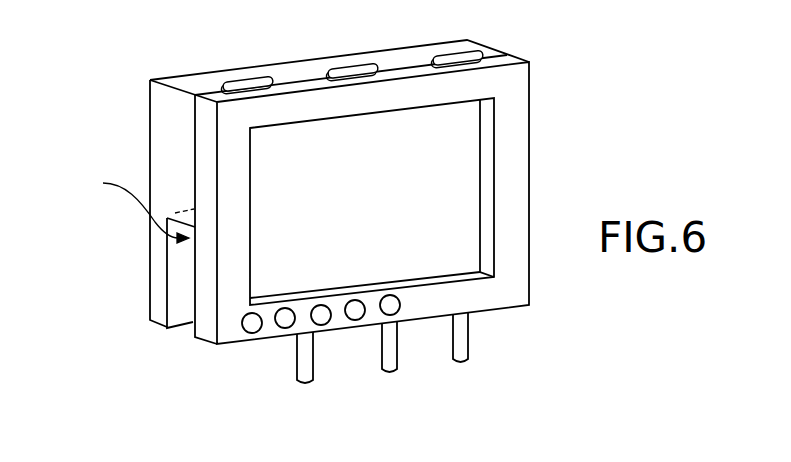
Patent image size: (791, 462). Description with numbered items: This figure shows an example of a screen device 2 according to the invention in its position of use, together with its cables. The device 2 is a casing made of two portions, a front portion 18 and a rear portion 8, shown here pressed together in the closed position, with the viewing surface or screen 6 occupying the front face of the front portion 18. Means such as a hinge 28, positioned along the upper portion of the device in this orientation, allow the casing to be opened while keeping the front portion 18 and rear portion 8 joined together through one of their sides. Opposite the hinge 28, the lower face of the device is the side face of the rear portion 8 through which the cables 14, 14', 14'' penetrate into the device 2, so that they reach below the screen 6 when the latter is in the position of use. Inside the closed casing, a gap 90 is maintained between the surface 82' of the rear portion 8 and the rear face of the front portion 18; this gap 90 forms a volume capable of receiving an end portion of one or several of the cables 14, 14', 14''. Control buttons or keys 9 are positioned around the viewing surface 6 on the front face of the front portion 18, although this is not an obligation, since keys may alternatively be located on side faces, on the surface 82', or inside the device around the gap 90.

The device 2 is at (161, 342).
The display screen 6 is at (457, 178).
The rear portion 8 is at (155, 123).
The control buttons or keys 9 is at (321, 313).
The cable 14 is at (261, 367).
The cable 14' is at (440, 363).
The cable 14'' is at (518, 337).
The front portion 18 is at (528, 94).
The hinge 28 is at (350, 70).
The surface 82' is at (133, 268).
The gap 90 is at (130, 207).